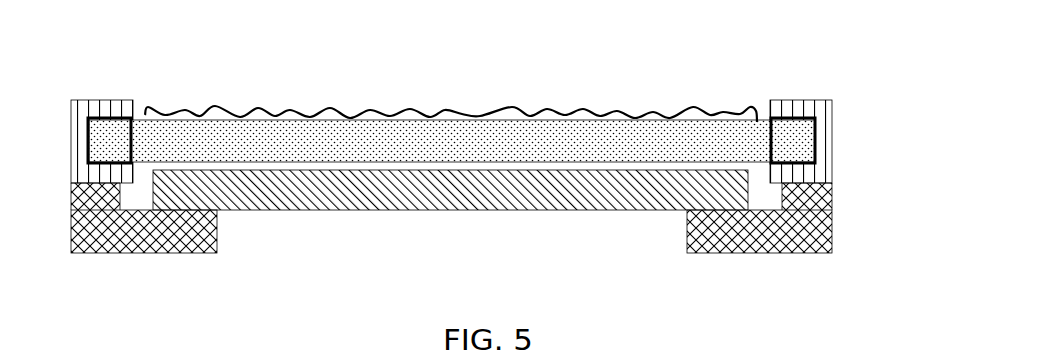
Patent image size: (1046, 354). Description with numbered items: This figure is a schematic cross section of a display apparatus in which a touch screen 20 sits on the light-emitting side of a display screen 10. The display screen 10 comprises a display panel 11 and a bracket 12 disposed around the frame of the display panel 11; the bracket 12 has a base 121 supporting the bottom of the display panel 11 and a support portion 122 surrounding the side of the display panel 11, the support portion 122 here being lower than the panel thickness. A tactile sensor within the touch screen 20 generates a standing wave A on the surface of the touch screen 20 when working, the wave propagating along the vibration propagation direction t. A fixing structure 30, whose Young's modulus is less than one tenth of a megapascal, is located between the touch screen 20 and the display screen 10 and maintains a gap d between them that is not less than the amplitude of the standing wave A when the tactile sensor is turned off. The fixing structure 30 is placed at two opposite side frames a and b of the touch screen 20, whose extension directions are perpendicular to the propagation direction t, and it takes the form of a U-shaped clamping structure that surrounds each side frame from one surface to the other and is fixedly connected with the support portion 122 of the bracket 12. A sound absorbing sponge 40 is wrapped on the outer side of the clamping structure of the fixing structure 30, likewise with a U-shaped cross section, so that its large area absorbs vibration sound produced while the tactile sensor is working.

The display screen 10 is at (517, 212).
The display panel 11 is at (833, 190).
The bracket 12 is at (497, 218).
The base 121 is at (890, 207).
The support portion 122 is at (833, 210).
The touch screen 20 is at (560, 120).
The fixing structure 30 is at (826, 137).
The sound absorbing sponge 40 is at (830, 123).
The standing wave A is at (473, 113).
The side frame a is at (76, 130).
The side frame b is at (816, 149).
The vibration propagation direction t is at (380, 92).
The gap d is at (440, 148).